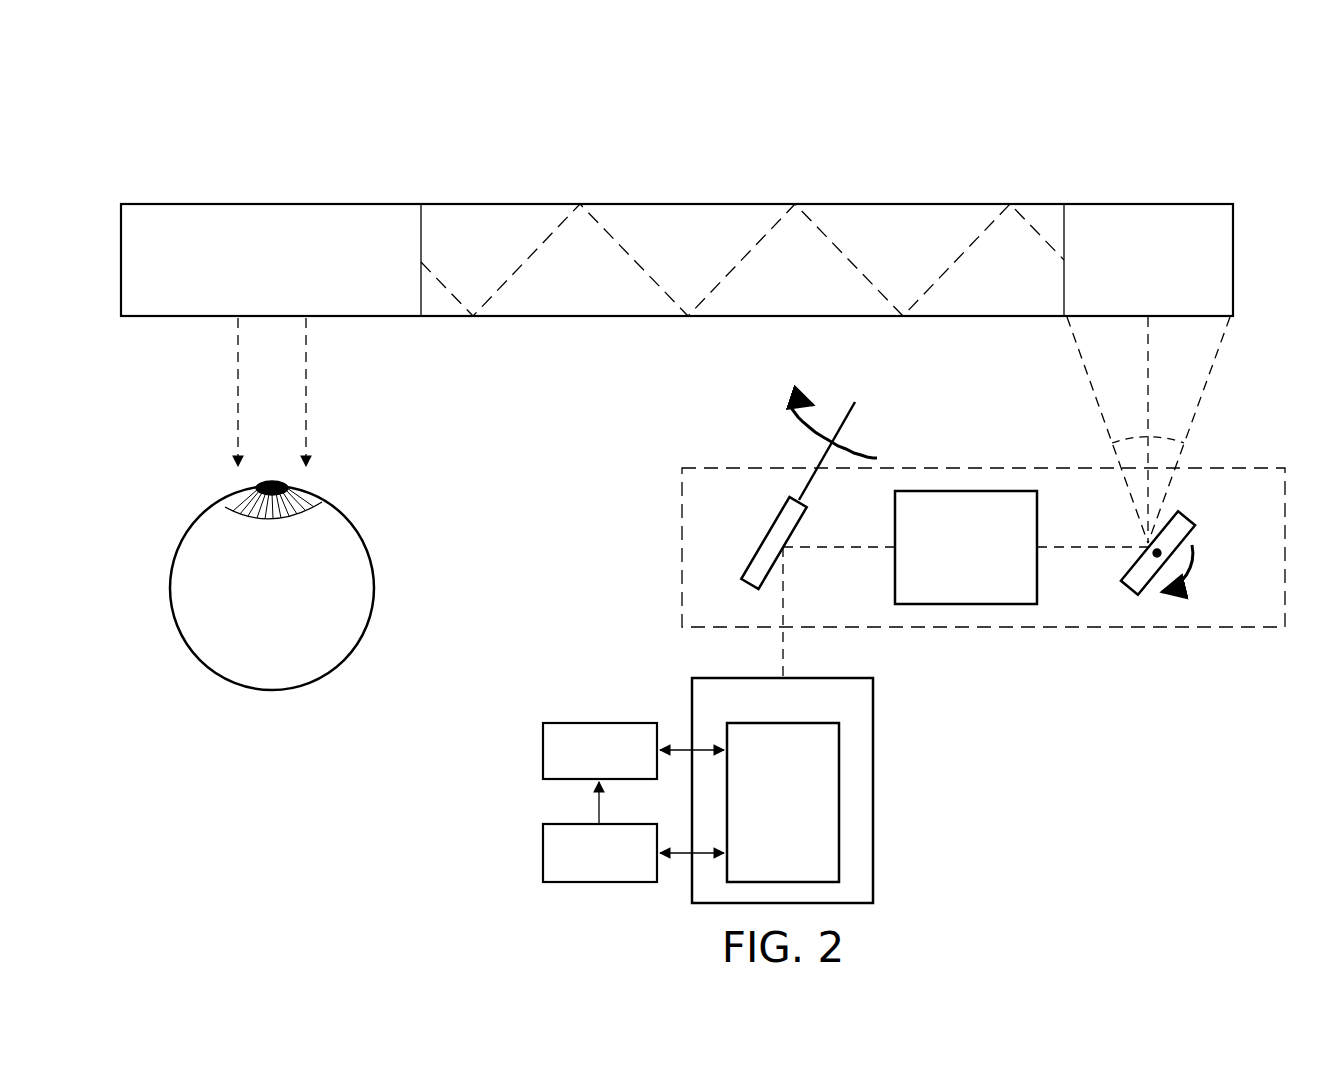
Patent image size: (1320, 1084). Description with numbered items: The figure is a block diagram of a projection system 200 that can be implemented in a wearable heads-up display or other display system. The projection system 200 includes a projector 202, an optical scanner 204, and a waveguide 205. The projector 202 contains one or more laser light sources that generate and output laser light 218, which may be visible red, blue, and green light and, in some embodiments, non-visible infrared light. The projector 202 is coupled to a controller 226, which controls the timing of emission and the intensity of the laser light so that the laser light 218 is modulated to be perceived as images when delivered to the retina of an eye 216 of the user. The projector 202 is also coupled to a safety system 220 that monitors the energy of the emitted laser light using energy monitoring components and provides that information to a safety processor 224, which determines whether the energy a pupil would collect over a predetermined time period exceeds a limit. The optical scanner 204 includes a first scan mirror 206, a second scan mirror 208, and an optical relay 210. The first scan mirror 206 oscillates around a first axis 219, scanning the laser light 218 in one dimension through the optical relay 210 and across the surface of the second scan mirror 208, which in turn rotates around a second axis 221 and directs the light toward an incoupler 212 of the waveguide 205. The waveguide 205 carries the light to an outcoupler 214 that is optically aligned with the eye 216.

The projection system 200 is at (362, 98).
The projector 202 is at (874, 790).
The optical scanner 204 is at (1009, 628).
The waveguide 205 is at (496, 212).
The first scan mirror 206 is at (768, 526).
The second scan mirror 208 is at (1187, 510).
The optical relay 210 is at (1038, 590).
The incoupler 212 is at (1128, 291).
The outcoupler 214 is at (248, 291).
The eye 216 is at (188, 648).
The laser light 218 is at (784, 592).
The first axis 219 is at (848, 421).
The safety system 220 is at (761, 813).
The second axis 221 is at (1190, 558).
The safety processor 224 is at (577, 867).
The controller 226 is at (577, 764).